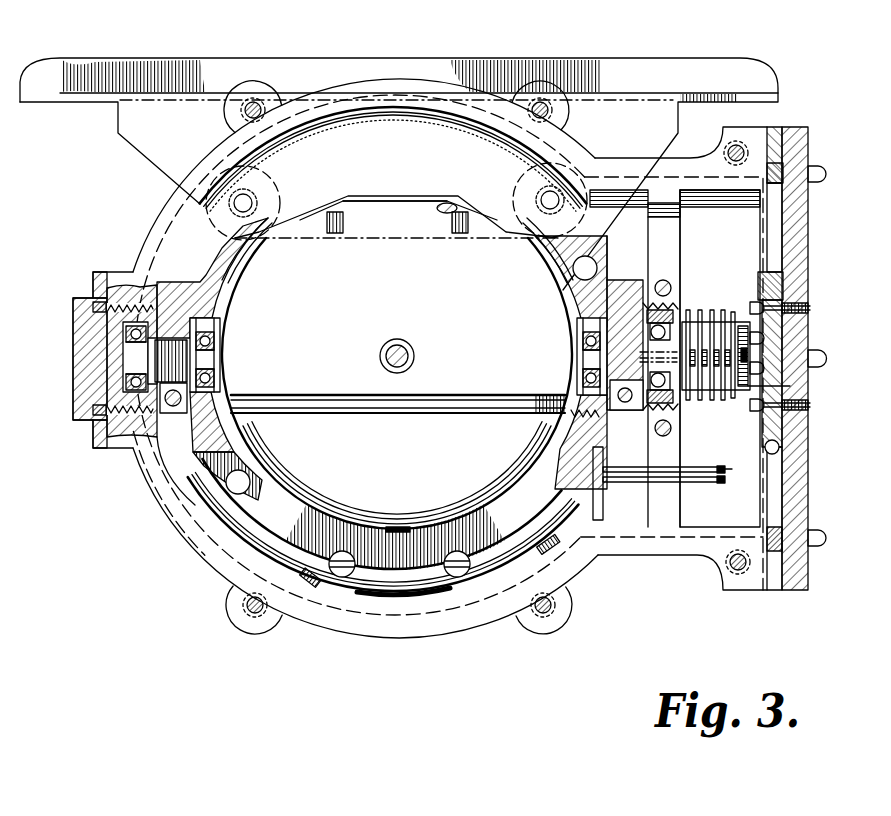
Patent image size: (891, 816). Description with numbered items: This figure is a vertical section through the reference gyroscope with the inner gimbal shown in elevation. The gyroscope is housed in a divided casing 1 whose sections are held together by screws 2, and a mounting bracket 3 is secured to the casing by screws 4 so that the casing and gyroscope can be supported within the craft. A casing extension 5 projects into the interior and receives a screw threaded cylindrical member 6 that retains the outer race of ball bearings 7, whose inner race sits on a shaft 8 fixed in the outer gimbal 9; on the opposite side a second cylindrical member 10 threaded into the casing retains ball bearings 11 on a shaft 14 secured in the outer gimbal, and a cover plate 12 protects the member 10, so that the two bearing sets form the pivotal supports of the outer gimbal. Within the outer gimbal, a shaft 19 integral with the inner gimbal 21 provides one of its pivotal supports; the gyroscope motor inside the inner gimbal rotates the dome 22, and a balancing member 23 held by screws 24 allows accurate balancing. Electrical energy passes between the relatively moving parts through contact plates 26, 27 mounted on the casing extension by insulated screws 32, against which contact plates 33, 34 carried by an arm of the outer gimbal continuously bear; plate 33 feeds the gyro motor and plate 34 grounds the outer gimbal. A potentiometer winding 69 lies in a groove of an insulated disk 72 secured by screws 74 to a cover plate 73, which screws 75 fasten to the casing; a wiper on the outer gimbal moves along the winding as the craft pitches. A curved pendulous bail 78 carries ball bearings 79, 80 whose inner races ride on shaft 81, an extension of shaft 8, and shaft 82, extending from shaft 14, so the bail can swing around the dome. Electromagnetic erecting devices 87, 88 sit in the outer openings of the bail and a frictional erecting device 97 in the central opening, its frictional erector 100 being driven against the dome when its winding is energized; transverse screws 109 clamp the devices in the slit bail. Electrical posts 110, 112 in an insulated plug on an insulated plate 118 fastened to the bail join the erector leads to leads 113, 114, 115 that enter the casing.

The divided casing 1 is at (143, 227).
The screws 2 is at (258, 103).
The mounting bracket 3 is at (668, 62).
The screws 4 is at (246, 203).
The casing extension 5 is at (682, 283).
The screw threaded cylindrical member 6 is at (647, 314).
The ball bearings 7 is at (655, 402).
The shaft 8 is at (590, 362).
The outer gimbal 9 is at (615, 250).
The second cylindrical member 10 is at (78, 338).
The ball bearings 11 is at (136, 384).
The cover plate 12 is at (76, 298).
The shaft 14 is at (130, 362).
The shaft 19 is at (415, 356).
The inner gimbal 21 is at (392, 206).
The dome 22 is at (326, 490).
The balancing member 23 is at (415, 205).
The screws 24 is at (451, 206).
The electrical contact plate 26 is at (692, 398).
The electrical contact plate 27 is at (710, 404).
The insulated screws 32 is at (790, 386).
The contact plate 33 is at (700, 347).
The contact plate 34 is at (708, 333).
The potentiometer winding 69 is at (779, 450).
The insulated disk 72 is at (759, 282).
The cover plate 73 is at (803, 241).
The screws 74 is at (752, 303).
The screws 75 is at (822, 175).
The curved pendulous bail 78 is at (246, 514).
The ball bearings 79 is at (586, 341).
The ball bearings 80 is at (207, 338).
The shaft 81 is at (588, 357).
The shaft 82 is at (207, 356).
The electromagnetic erecting device 87 is at (554, 566).
The electromagnetic erecting device 88 is at (250, 536).
The frictional erecting device 97 is at (377, 606).
The frictional erector 100 is at (400, 526).
The screws 109 is at (342, 572).
The electrical post 110 is at (714, 483).
The electrical post 112 is at (706, 470).
The lead 113 is at (727, 482).
The lead 114 is at (727, 470).
The lead 115 is at (723, 467).
The insulated plate 118 is at (604, 505).